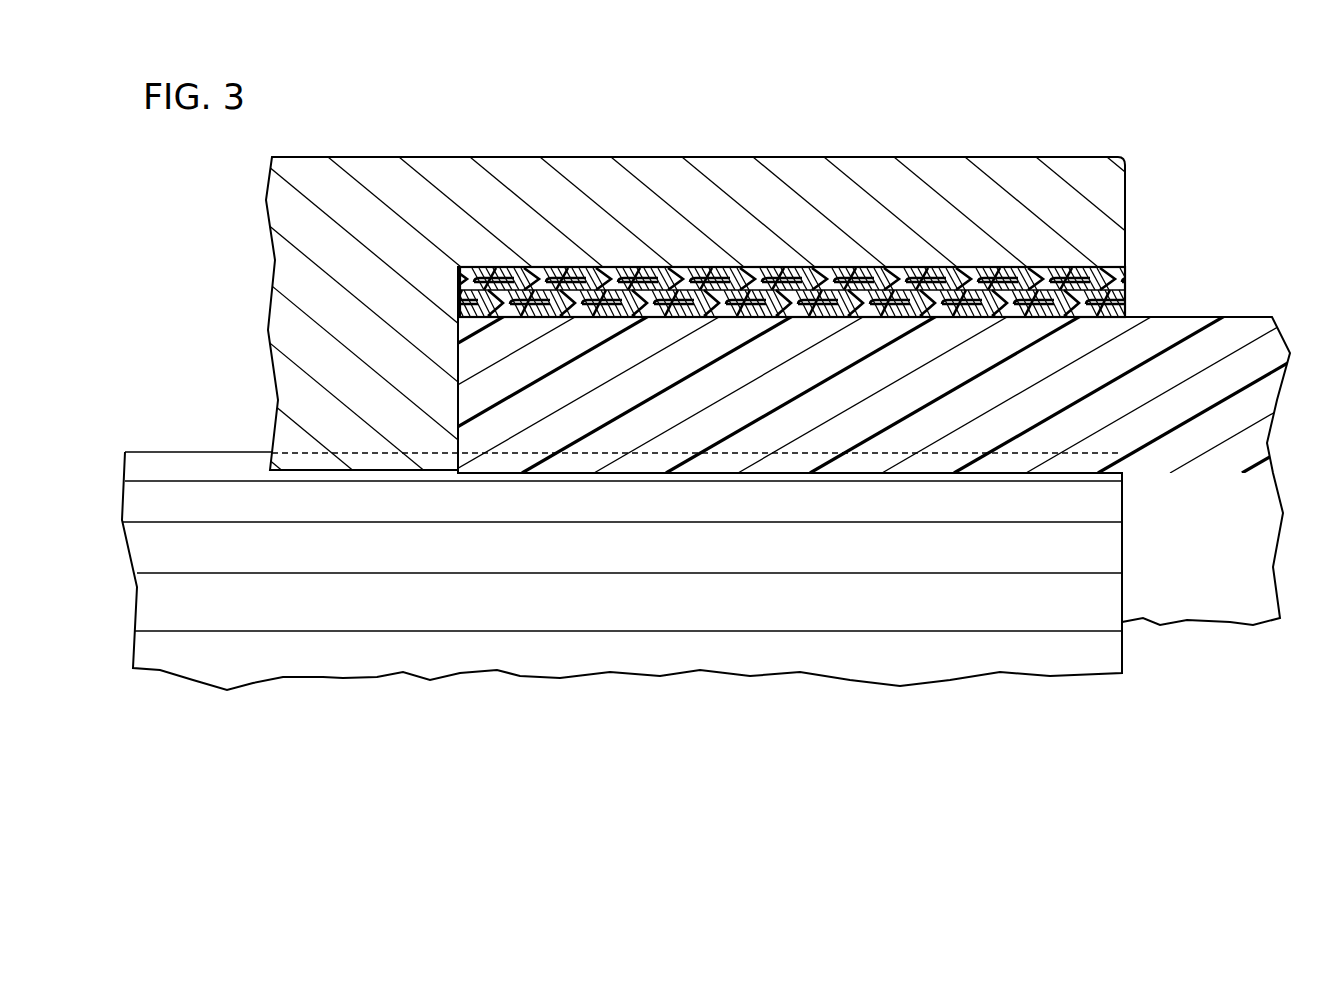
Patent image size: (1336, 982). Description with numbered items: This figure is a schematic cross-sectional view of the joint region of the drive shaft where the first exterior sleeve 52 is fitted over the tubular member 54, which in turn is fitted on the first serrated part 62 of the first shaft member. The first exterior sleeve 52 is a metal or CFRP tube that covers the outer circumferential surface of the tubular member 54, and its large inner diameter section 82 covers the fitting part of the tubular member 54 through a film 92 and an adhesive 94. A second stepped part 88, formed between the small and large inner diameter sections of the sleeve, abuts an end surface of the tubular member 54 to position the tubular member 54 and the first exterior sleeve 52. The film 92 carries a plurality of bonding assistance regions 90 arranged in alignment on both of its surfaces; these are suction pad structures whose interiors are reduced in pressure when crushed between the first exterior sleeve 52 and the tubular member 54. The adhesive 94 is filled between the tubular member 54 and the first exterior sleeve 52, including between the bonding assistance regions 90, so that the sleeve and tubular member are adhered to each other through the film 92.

The first exterior sleeve 52 is at (719, 162).
The tubular member 54 is at (1175, 337).
The first serrated part 62 is at (843, 612).
The large inner diameter section 82 is at (642, 265).
The second stepped part 88 is at (458, 408).
The bonding assistance regions 90 is at (1036, 316).
The film 92 is at (922, 292).
The adhesive 94 is at (825, 272).